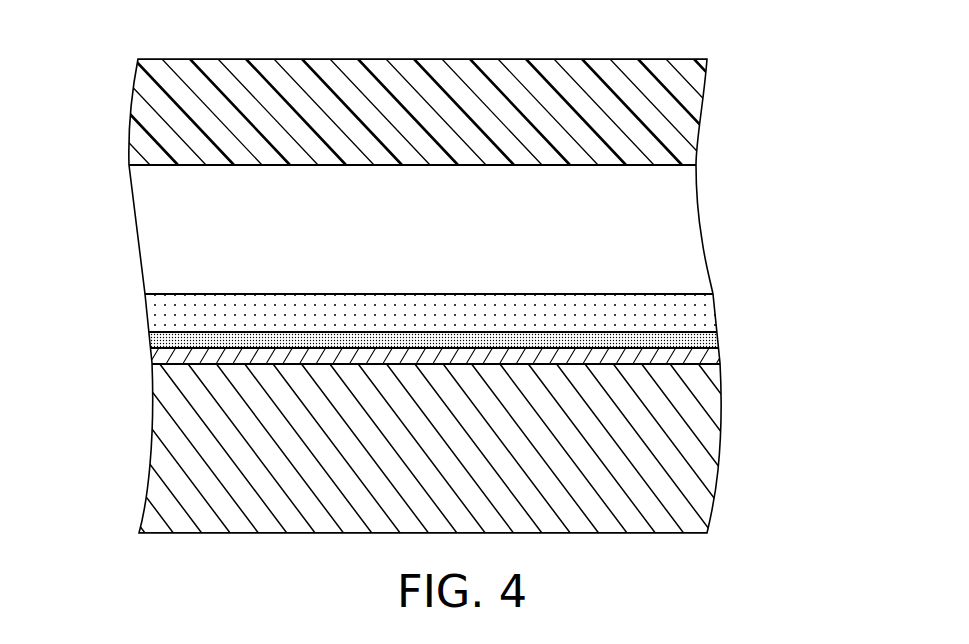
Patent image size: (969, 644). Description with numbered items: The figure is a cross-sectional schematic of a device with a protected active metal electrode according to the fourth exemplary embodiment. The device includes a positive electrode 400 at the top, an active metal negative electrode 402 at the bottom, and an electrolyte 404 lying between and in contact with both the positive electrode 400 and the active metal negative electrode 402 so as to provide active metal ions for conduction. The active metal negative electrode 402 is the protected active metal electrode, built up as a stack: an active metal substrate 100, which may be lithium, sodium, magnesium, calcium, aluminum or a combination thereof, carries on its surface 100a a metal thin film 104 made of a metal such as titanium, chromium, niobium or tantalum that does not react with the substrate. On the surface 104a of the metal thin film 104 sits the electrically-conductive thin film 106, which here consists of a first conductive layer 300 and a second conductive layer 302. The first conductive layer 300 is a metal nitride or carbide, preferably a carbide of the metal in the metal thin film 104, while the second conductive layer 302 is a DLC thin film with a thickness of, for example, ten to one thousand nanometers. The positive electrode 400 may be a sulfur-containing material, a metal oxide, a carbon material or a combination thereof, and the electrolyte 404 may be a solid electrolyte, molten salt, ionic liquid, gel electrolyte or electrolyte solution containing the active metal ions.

The active metal substrate 100 is at (424, 448).
The surface of the active metal substrate 100a is at (178, 363).
The metal thin film 104 is at (723, 357).
The surface of the metal thin film 104a is at (173, 340).
The electrically-conductive thin film 106 is at (474, 305).
The first conductive layer 300 is at (715, 341).
The second conductive layer 302 is at (700, 318).
The positive electrode 400 is at (687, 98).
The active metal negative electrode 402 is at (457, 397).
The electrolyte 404 is at (687, 237).